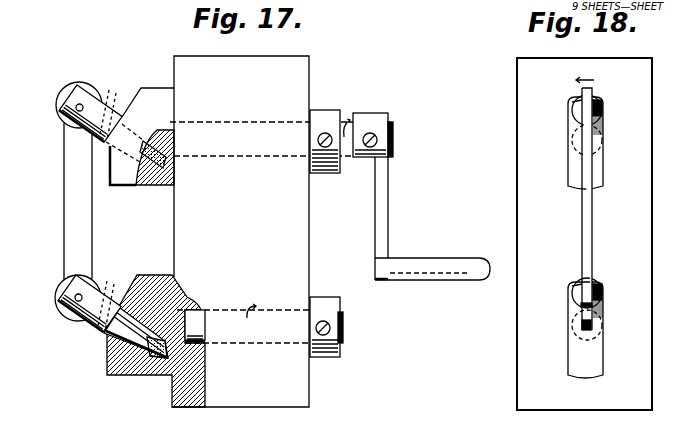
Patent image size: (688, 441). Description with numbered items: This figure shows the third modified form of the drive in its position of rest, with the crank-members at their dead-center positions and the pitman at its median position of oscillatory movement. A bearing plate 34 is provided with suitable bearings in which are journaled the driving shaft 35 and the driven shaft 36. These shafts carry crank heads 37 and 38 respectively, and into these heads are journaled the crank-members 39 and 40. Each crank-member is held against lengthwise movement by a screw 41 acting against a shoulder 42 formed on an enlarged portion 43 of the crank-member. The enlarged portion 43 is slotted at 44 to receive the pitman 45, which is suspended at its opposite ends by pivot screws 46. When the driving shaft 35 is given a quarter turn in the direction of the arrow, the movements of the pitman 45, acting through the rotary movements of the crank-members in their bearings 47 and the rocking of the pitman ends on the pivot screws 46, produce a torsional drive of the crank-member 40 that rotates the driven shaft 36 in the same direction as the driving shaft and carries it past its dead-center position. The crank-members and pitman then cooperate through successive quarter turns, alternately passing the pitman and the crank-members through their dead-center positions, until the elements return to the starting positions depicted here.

In FIG. 17, the bearing plate 34 is at (231, 58).
In FIG. 18, the bearing plate 34 is at (618, 60).
In FIG. 17, the driving shaft 35 is at (344, 166).
In FIG. 18, the driving shaft 35 is at (598, 152).
In FIG. 17, the driven shaft 36 is at (200, 309).
In FIG. 18, the driven shaft 36 is at (601, 352).
In FIG. 17, the crank head 37 is at (147, 96).
In FIG. 18, the crank head 37 is at (569, 173).
In FIG. 17, the crank head 38 is at (135, 375).
In FIG. 17, the crank-member 39 is at (165, 128).
In FIG. 17, the crank-member 40 is at (118, 333).
In FIG. 17, the screw 41 is at (174, 152).
In FIG. 17, the shoulder 42 is at (137, 130).
In FIG. 17, the enlarged portion 43 is at (86, 100).
In FIG. 18, the enlarged portion 43 is at (605, 102).
In FIG. 17, the slot 44 is at (127, 92).
In FIG. 18, the slot 44 is at (578, 338).
In FIG. 17, the pitman 45 is at (78, 201).
In FIG. 18, the pitman 45 is at (590, 238).
In FIG. 17, the pivot screw 46 is at (72, 93).
In FIG. 18, the pivot screw 46 is at (572, 107).
In FIG. 17, the bearing 47 is at (145, 186).